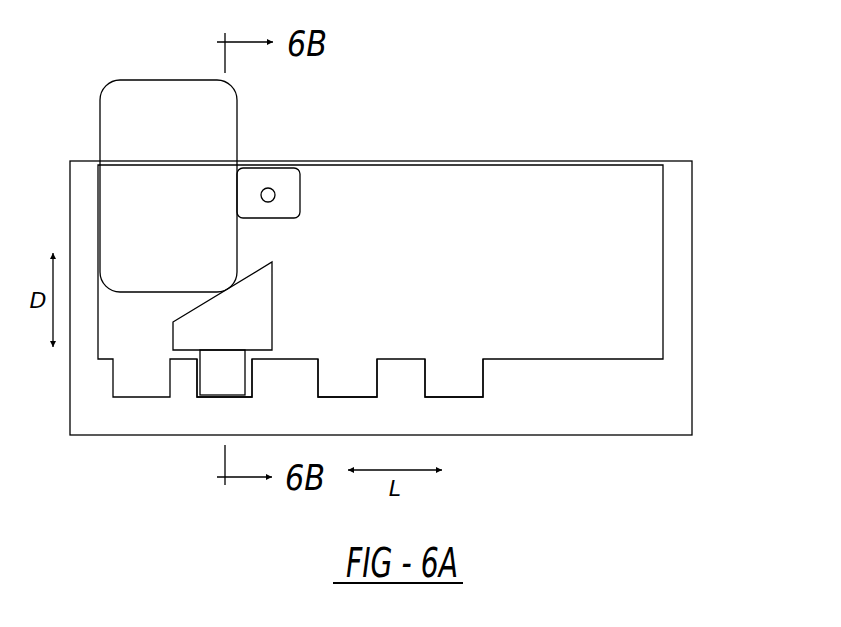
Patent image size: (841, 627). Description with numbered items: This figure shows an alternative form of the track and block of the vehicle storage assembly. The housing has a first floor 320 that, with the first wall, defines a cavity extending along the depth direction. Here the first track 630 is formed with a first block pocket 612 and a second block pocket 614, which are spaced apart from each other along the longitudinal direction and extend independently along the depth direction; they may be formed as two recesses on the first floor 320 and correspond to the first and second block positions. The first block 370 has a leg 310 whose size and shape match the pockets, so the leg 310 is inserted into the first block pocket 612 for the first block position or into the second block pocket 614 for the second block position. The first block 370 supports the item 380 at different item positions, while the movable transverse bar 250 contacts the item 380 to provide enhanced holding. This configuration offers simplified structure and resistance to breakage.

The first track 630 is at (525, 383).
The first floor 320 is at (507, 310).
The second block pocket 614 is at (360, 370).
The first block pocket 612 is at (247, 373).
The leg 310 is at (217, 368).
The first block 370 is at (278, 283).
The item 380 is at (150, 202).
The transverse bar 250 is at (285, 180).